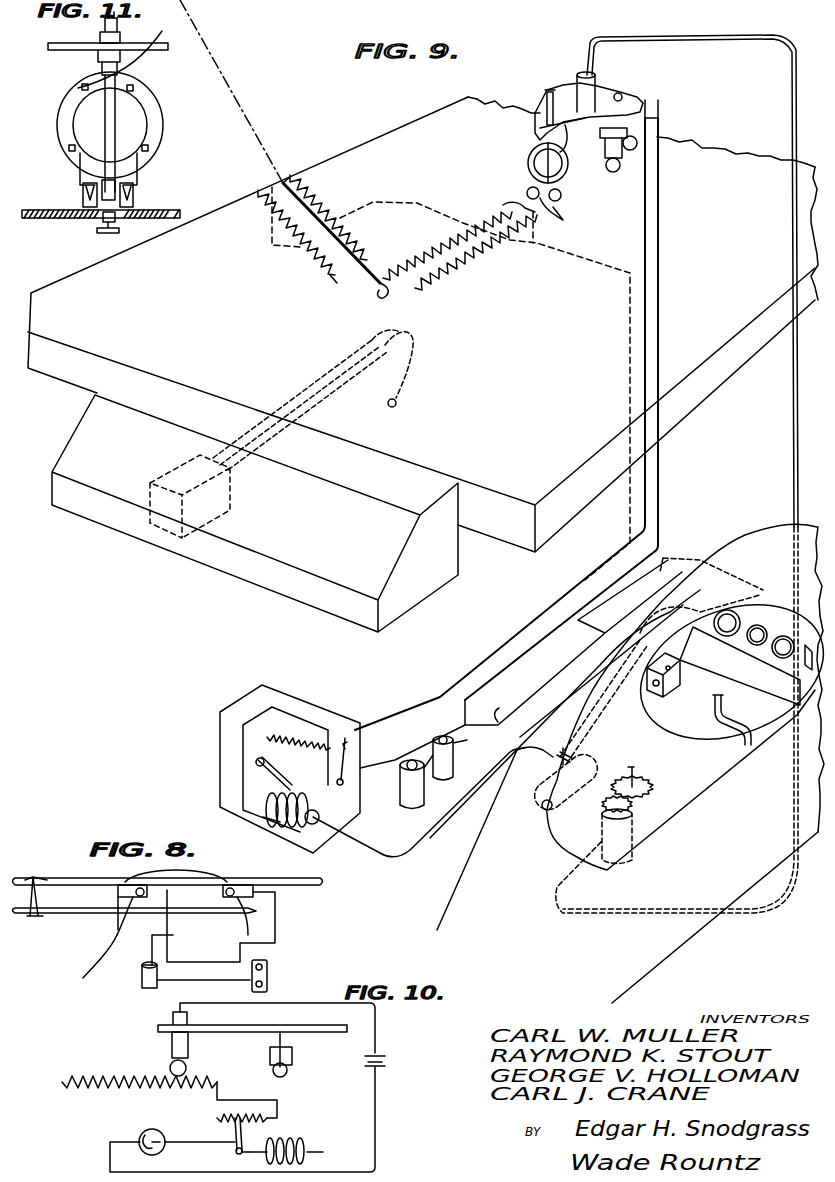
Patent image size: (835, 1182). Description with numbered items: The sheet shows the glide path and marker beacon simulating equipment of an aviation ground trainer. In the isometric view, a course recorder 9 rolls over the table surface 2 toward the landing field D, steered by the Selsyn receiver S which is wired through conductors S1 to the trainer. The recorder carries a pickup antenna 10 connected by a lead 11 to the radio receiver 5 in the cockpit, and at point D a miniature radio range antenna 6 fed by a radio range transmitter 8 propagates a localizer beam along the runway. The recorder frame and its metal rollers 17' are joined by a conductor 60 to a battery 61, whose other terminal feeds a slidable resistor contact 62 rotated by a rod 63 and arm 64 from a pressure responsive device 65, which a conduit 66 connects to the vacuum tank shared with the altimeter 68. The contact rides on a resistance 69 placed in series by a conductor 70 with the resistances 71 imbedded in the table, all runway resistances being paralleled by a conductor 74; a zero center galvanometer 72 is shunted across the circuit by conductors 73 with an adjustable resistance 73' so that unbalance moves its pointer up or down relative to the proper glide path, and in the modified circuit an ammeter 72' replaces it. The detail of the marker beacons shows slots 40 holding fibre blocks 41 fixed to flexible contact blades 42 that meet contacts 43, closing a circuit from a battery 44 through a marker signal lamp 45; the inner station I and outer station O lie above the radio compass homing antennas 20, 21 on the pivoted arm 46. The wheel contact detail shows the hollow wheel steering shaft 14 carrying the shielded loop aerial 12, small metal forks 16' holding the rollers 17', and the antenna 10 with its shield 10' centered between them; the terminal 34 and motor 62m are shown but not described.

In FIG. 9, the table surface 2 is at (545, 493).
In FIG. 9, the radio receiver 5 is at (660, 694).
In FIG. 9, the miniature radio range antenna 6 is at (313, 400).
In FIG. 9, the radio range transmitter 8 is at (165, 533).
In FIG. 9, the course recorder 9 is at (632, 100).
In FIG. 10, the course recorder 9 is at (322, 1035).
In FIG. 11, the pickup antenna 10 is at (126, 195).
In FIG. 11, the antenna shield 10' is at (123, 133).
In FIG. 9, the antenna shield 10' is at (547, 163).
In FIG. 11, the lead 11 is at (100, 28).
In FIG. 9, the lead 11 is at (573, 83).
In FIG. 11, the shielded loop aerial 12 is at (161, 110).
In FIG. 11, the hollow wheel steering shaft 14 is at (103, 68).
In FIG. 11, the metal fork 16' is at (92, 169).
In FIG. 11, the metal roller 17' is at (101, 205).
In FIG. 9, the metal roller 17' is at (561, 213).
In FIG. 10, the metal roller 17' is at (231, 1061).
In FIG. 8, the radio compass homing antenna 20 is at (110, 948).
In FIG. 8, the radio compass homing antenna 21 is at (215, 948).
In FIG. 11, the terminal 34 is at (118, 25).
In FIG. 8, the slot 40 is at (135, 871).
In FIG. 11, the fibre block 41 is at (97, 228).
In FIG. 9, the fibre block 41 is at (505, 215).
In FIG. 8, the fibre block 41 is at (120, 882).
In FIG. 8, the flexible contact blade 42 is at (130, 912).
In FIG. 8, the contact 43 is at (118, 890).
In FIG. 8, the battery 44 is at (140, 985).
In FIG. 9, the marker signal lamp 45 is at (795, 670).
In FIG. 8, the marker signal lamp 45 is at (268, 968).
In FIG. 8, the adjustable pivotally mounted arm 46 is at (92, 915).
In FIG. 11, the conductor 60 is at (150, 68).
In FIG. 9, the conductor 60 is at (645, 503).
In FIG. 10, the conductor 60 is at (376, 1035).
In FIG. 9, the battery 61 is at (430, 782).
In FIG. 10, the battery 61 is at (386, 1060).
In FIG. 9, the slidable resistor contact 62 is at (262, 748).
In FIG. 10, the slidable resistor contact 62 is at (233, 1130).
In FIG. 9, the motor 62m is at (545, 810).
In FIG. 9, the rod 63 is at (263, 817).
In FIG. 10, the rod 63 is at (236, 1155).
In FIG. 9, the arm 64 is at (255, 772).
In FIG. 9, the pressure responsive device 65 is at (290, 825).
In FIG. 10, the pressure responsive device 65 is at (292, 1140).
In FIG. 9, the conduit 66 is at (381, 855).
In FIG. 10, the conduit 66 is at (322, 1150).
In FIG. 9, the altimeter 68 is at (765, 628).
In FIG. 9, the resistance 69 is at (310, 733).
In FIG. 10, the resistance 69 is at (243, 1124).
In FIG. 9, the conductor 70 is at (488, 658).
In FIG. 10, the conductor 70 is at (277, 1100).
In FIG. 9, the resistance 71 is at (324, 215).
In FIG. 10, the resistance 71 is at (110, 1088).
In FIG. 9, the zero center galvanometer 72 is at (696, 609).
In FIG. 10, the ammeter 72' is at (187, 1130).
In FIG. 9, the conductor 73 is at (505, 700).
In FIG. 9, the adjustable resistance 73' is at (354, 743).
In FIG. 9, the conductor 74 is at (420, 207).
In FIG. 9, the landing field D is at (380, 294).
In FIG. 9, the inner marker beacon I is at (365, 258).
In FIG. 9, the outer marker beacon O is at (300, 225).
In FIG. 9, the Selsyn receiver S is at (633, 840).
In FIG. 9, the conductors S1 is at (715, 37).